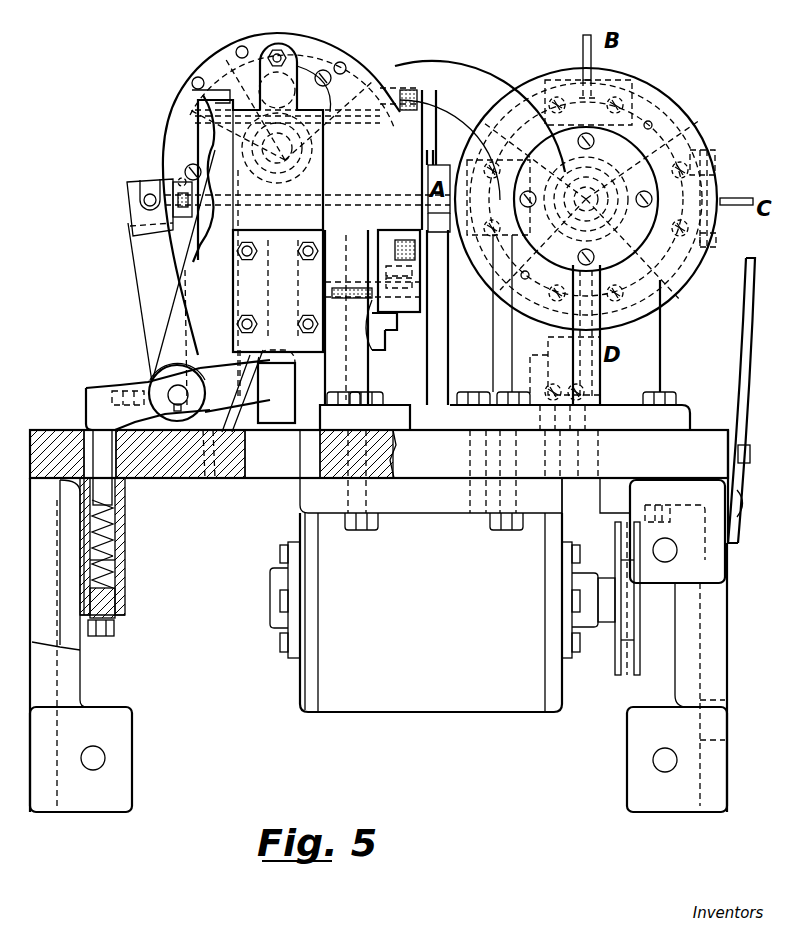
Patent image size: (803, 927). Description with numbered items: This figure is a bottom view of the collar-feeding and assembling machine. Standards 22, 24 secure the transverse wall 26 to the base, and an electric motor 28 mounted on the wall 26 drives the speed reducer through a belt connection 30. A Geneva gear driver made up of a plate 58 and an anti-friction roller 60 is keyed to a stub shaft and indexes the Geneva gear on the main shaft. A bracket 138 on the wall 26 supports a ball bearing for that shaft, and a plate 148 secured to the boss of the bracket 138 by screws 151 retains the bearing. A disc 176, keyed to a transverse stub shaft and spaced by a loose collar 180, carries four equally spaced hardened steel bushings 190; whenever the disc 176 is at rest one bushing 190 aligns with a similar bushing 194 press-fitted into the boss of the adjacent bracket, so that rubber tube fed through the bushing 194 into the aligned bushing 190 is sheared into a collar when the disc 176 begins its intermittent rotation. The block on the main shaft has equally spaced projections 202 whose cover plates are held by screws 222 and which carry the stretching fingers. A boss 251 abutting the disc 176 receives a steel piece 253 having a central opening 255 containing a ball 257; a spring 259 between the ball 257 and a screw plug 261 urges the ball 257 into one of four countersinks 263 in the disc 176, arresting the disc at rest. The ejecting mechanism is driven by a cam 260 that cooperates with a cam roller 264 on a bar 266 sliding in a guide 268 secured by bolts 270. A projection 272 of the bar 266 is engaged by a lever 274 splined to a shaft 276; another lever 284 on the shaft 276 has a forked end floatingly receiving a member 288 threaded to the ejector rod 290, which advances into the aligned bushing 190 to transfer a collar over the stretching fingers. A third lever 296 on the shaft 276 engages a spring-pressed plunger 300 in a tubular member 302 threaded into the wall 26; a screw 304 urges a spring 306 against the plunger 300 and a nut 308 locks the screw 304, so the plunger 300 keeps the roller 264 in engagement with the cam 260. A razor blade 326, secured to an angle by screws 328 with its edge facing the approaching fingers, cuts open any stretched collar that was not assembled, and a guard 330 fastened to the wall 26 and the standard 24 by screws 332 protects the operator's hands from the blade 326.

The standard 22 is at (126, 740).
The standard 24 is at (630, 760).
The wall 26 is at (43, 432).
The electric motor 28 is at (368, 714).
The belt connection 30 is at (624, 678).
The plate 58 is at (440, 282).
The anti-friction roller 60 is at (418, 295).
The bracket 138 is at (682, 421).
The plate 148 is at (612, 148).
The screws 151 is at (648, 193).
The disc 176 is at (416, 106).
The collar 180 is at (430, 163).
The hardened steel bushings 190 is at (438, 128).
The bushing 194 is at (400, 90).
The projections 202 is at (703, 160).
The screws 222 is at (708, 242).
The boss 251 is at (342, 322).
The steel piece 253 is at (370, 352).
The central opening 255 is at (374, 342).
The ball 257 is at (385, 290).
The spring 259 is at (398, 252).
The cam 260 is at (218, 142).
The screw plug 261 is at (255, 297).
The countersinks 263 is at (382, 330).
The cam roller 264 is at (279, 48).
The bar 266 is at (238, 470).
The guide 268 is at (232, 350).
The bolts 270 is at (238, 325).
The projection 272 is at (282, 432).
The lever 274 is at (206, 474).
The shaft 276 is at (170, 392).
The lever 284 is at (150, 292).
The member 288 is at (148, 183).
The ejector rod 290 is at (170, 236).
The lever 296 is at (92, 403).
The plunger 300 is at (104, 466).
The tubular member 302 is at (126, 537).
The screw 304 is at (114, 631).
The spring 306 is at (126, 565).
The nut 308 is at (126, 605).
The razor blade 326 is at (562, 362).
The screws 328 is at (585, 402).
The guard 330 is at (742, 310).
The screws 332 is at (738, 451).